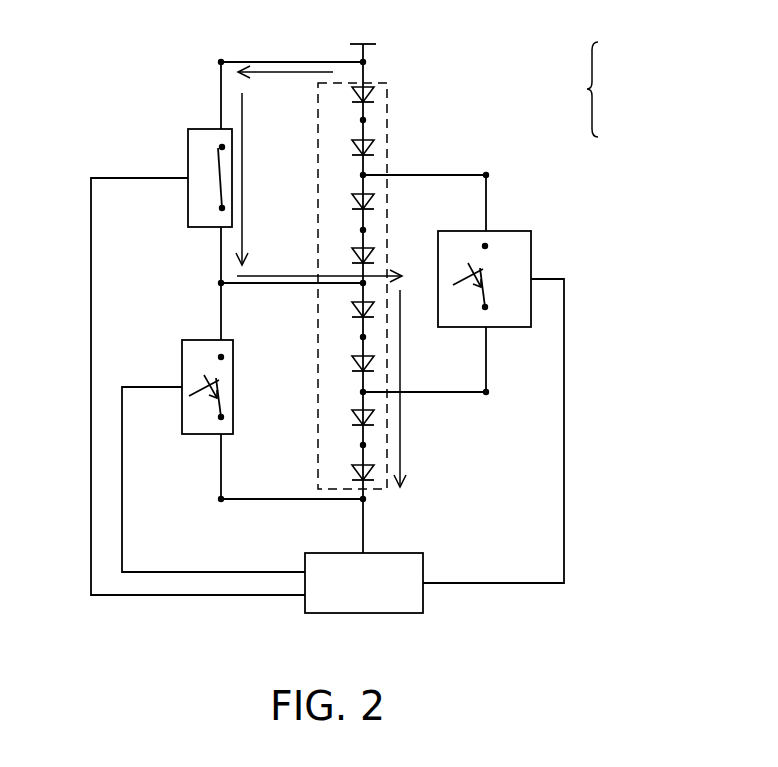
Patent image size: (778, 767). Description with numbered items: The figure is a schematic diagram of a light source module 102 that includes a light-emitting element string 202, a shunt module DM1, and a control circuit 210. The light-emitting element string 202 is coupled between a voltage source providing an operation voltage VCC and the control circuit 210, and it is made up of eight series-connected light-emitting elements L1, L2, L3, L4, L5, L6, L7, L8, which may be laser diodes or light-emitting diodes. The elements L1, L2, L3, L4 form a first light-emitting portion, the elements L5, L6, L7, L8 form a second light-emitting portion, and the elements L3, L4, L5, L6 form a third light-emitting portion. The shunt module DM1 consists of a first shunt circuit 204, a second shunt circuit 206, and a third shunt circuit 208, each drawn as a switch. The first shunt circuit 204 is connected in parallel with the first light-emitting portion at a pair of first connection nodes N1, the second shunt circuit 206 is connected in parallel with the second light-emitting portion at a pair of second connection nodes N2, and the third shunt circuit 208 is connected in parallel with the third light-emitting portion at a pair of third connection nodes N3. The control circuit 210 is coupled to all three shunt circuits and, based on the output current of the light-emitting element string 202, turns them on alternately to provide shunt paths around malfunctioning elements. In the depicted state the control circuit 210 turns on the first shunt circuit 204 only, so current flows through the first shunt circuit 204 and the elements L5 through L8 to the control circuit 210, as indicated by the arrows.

The light source module 102 is at (372, 346).
The light-emitting element string 202 is at (318, 143).
The first shunt circuit 204 is at (188, 148).
The second shunt circuit 206 is at (208, 340).
The third shunt circuit 208 is at (515, 231).
The control circuit 210 is at (423, 600).
The first connection nodes N1 is at (363, 283).
The second connection nodes N2 is at (363, 283).
The third connection nodes N3 is at (363, 392).
The light-emitting element L1 is at (348, 96).
The light-emitting element L2 is at (348, 149).
The light-emitting element L3 is at (348, 203).
The light-emitting element L4 is at (348, 257).
The light-emitting element L5 is at (348, 311).
The light-emitting element L6 is at (348, 365).
The light-emitting element L7 is at (348, 419).
The light-emitting element L8 is at (348, 474).
The operation voltage VCC is at (363, 41).
The shunt module DM1 is at (594, 90).